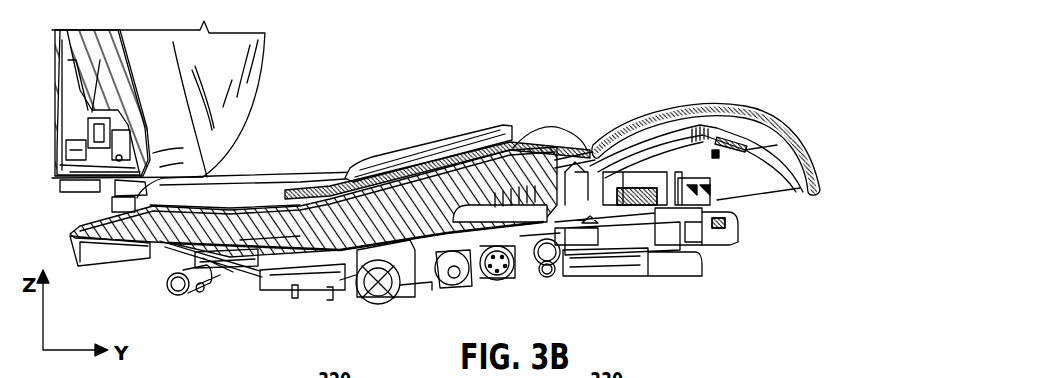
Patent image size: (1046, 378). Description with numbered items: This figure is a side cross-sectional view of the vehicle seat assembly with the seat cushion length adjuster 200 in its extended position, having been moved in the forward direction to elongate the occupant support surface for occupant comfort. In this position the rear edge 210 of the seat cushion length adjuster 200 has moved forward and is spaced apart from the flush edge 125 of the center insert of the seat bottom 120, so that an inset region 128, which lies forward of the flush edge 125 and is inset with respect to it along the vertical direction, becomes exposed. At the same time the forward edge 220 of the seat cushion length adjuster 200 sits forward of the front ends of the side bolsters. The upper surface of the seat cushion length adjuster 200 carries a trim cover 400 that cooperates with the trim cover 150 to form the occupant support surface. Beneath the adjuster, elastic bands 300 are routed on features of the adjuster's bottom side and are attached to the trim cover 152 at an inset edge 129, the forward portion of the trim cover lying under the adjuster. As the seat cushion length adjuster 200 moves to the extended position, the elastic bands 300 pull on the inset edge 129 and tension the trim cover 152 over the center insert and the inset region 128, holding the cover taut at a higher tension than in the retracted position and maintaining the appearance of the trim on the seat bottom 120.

The seat bottom 120 is at (388, 141).
The flush edge 125 is at (517, 141).
The inset region 128 is at (549, 145).
The inset edge 129 is at (721, 165).
The trim cover 150 is at (248, 191).
The trim cover 152 is at (478, 149).
The seat cushion length adjuster 200 is at (807, 117).
The rear edge 210 is at (586, 124).
The forward edge 220 is at (838, 169).
The elastic bands 300 is at (739, 158).
The trim cover 400 is at (694, 102).